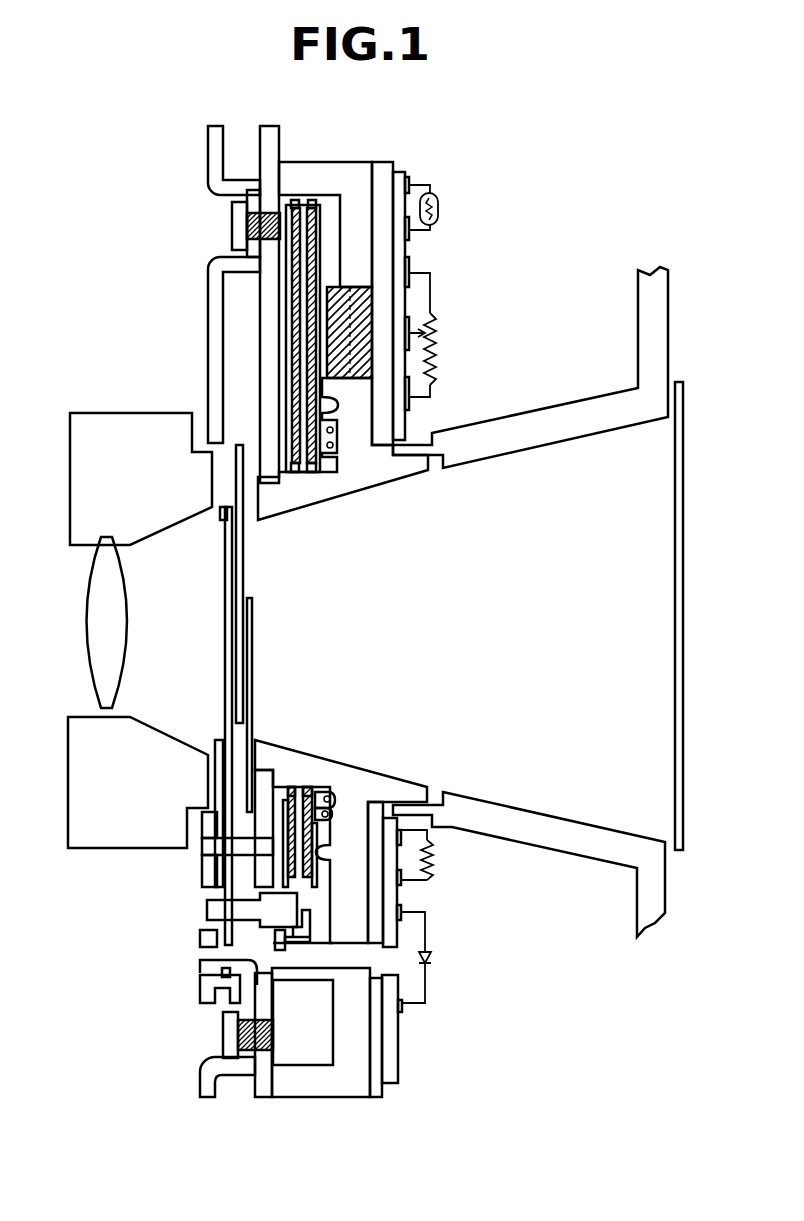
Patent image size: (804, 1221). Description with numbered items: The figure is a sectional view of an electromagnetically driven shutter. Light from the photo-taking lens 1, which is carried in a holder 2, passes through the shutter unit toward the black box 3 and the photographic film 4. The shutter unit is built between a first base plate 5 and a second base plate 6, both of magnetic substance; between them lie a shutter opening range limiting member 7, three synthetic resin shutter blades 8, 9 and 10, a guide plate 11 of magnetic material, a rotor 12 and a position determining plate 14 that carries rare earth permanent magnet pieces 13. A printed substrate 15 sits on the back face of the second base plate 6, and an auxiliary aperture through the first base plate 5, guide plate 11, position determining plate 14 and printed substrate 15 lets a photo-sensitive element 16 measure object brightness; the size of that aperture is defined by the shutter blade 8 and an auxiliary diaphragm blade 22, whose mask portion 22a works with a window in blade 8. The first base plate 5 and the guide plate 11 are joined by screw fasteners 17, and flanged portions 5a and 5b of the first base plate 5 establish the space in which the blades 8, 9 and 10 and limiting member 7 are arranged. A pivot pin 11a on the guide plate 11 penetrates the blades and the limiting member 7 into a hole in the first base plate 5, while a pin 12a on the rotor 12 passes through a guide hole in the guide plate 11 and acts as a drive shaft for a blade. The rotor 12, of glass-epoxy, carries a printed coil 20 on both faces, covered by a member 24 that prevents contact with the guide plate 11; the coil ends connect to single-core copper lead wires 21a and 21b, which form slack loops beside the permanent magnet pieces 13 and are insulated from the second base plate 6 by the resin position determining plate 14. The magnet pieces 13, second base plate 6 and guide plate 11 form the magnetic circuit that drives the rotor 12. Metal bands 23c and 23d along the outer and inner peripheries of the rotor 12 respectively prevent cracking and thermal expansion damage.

The photo-taking lens 1 is at (103, 646).
The holder 2 is at (70, 779).
The black box 3 is at (645, 907).
The photographic film 4 is at (675, 718).
The first base plate 5 is at (208, 299).
The flanged portion 5a is at (242, 185).
The flanged portion 5b is at (235, 1077).
The second base plate 6 is at (395, 178).
The shutter opening range limiting member 7 is at (221, 514).
The shutter blade 8 is at (228, 562).
The shutter blade 9 is at (243, 577).
The shutter blade 10 is at (252, 615).
The guide plate 11 is at (270, 137).
The pivot pin 11a is at (208, 846).
The rotor 12 is at (318, 218).
The pin 12a is at (208, 911).
The permanent magnet pieces 13 is at (365, 295).
The position determining plate 14 is at (362, 176).
The printed substrate 15 is at (394, 1044).
The photo-sensitive element 16 is at (431, 962).
The screw fasteners 17 is at (232, 226).
The coil 20 is at (308, 352).
The lead wire 21a is at (322, 792).
The lead wire 21b is at (333, 812).
The auxiliary diaphragm blade 22 is at (240, 985).
The mask portion 22a is at (215, 963).
The outer metal portion 23c is at (295, 205).
The inner metal portion 23d is at (310, 472).
The covering member 24 is at (292, 300).